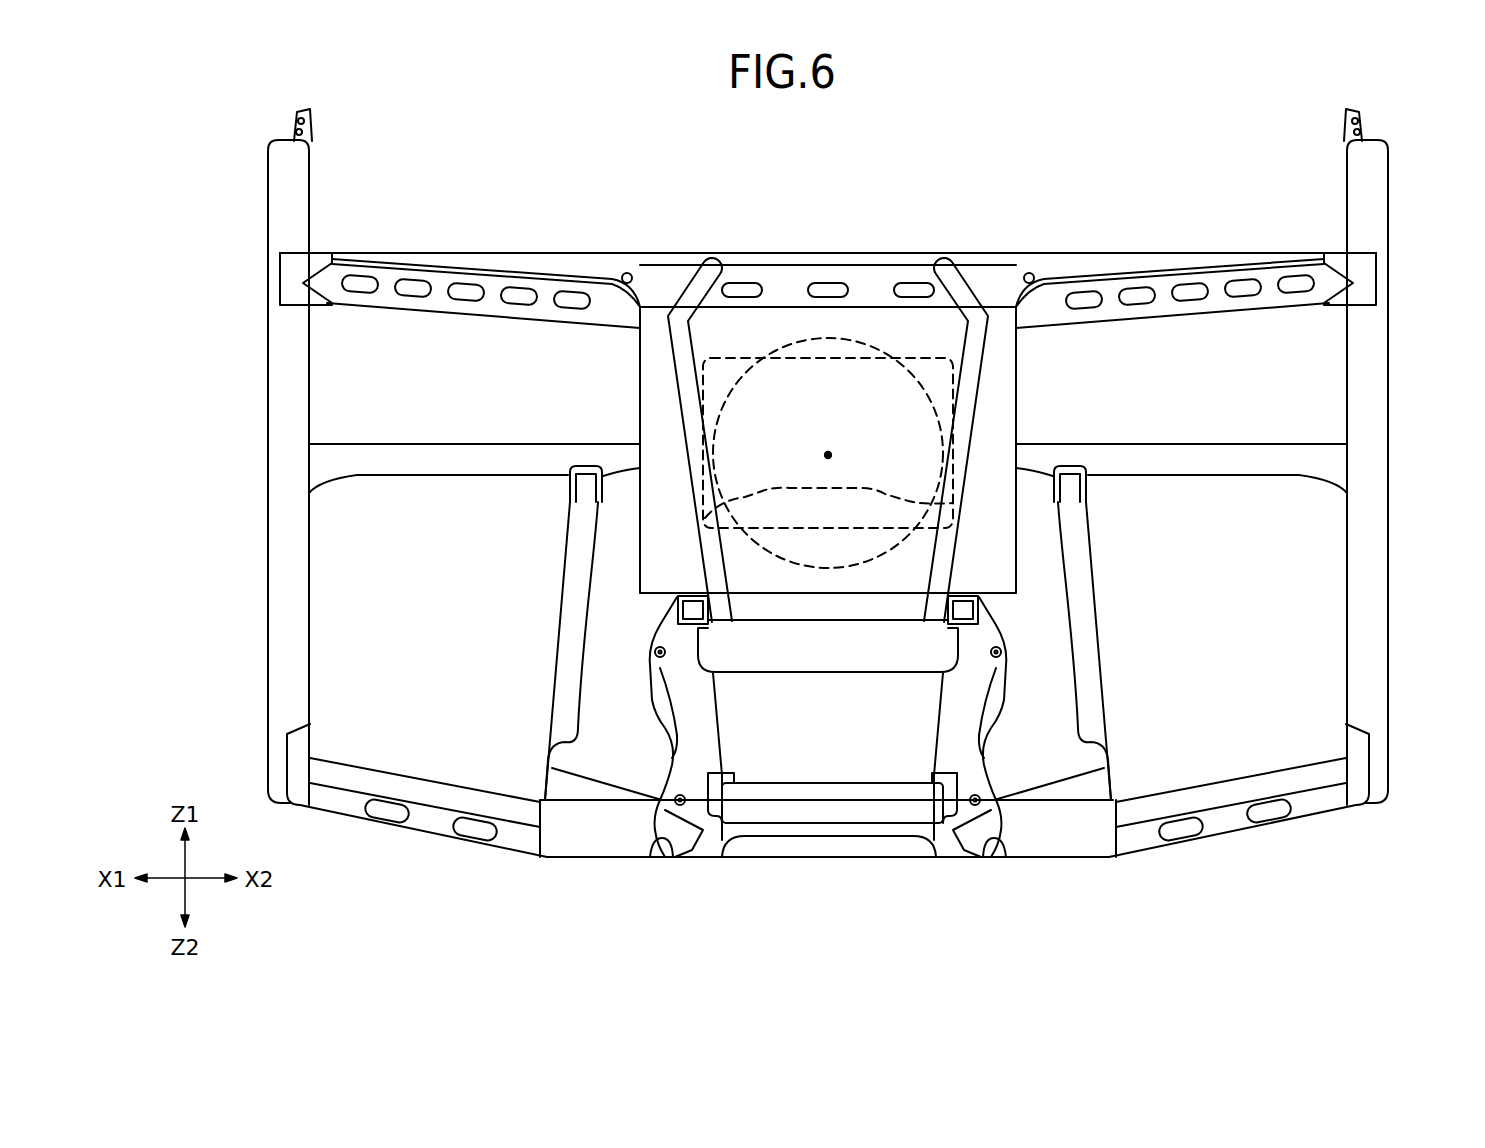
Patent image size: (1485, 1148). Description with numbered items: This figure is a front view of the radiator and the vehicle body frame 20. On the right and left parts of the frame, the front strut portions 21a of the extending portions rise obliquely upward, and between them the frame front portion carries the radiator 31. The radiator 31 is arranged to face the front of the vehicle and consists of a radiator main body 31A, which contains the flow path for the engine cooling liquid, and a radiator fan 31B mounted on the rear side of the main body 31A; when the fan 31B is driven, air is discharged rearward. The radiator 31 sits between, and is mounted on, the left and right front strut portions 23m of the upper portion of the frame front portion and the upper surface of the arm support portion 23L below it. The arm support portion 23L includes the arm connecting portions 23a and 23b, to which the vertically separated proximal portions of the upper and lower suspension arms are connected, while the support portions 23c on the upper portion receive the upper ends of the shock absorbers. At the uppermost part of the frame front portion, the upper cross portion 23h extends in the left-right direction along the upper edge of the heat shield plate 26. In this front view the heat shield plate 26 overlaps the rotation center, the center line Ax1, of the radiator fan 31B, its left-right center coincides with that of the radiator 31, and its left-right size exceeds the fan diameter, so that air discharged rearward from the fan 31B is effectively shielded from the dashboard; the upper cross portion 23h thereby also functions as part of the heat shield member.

The vehicle body frame 20 is at (1203, 250).
The front strut portion 21a is at (268, 400).
The support portion 23c is at (628, 272).
The upper cross portion 23h is at (770, 280).
The radiator 31 is at (828, 363).
The radiator main body 31A is at (830, 325).
The radiator fan 31B is at (868, 350).
The heat shield plate 26 is at (936, 355).
The front strut portion 23m is at (680, 352).
The center line Ax1 is at (832, 450).
The arm connecting portion 23a is at (656, 647).
The arm connecting portion 23b is at (681, 807).
The arm support portion 23L is at (868, 826).